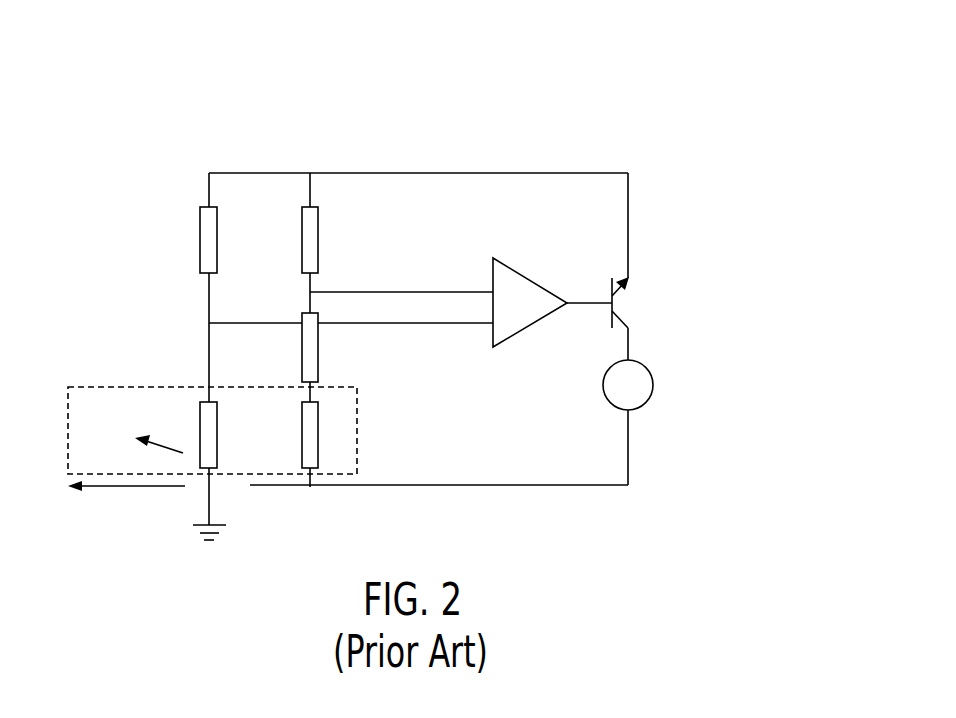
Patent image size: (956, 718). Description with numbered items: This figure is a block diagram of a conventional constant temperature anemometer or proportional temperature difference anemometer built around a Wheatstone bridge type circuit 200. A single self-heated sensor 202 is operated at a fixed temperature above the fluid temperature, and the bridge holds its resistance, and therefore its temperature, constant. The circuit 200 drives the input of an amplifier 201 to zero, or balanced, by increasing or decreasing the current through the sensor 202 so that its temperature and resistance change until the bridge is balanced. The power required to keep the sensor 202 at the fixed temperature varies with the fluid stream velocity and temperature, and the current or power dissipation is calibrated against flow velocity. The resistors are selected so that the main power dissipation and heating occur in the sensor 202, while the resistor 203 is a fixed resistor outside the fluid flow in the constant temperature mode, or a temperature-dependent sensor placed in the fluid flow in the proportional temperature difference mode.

The circuit 200 is at (368, 112).
The amplifier 201 is at (535, 285).
The self-heated sensor 202 is at (200, 410).
The resistor 203 is at (316, 434).